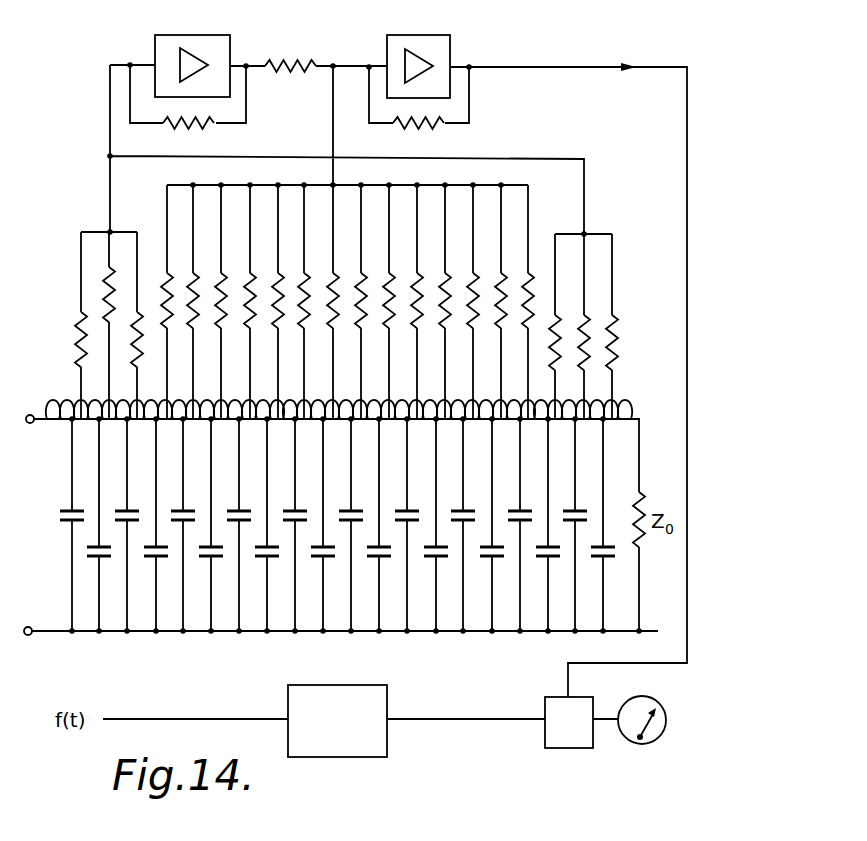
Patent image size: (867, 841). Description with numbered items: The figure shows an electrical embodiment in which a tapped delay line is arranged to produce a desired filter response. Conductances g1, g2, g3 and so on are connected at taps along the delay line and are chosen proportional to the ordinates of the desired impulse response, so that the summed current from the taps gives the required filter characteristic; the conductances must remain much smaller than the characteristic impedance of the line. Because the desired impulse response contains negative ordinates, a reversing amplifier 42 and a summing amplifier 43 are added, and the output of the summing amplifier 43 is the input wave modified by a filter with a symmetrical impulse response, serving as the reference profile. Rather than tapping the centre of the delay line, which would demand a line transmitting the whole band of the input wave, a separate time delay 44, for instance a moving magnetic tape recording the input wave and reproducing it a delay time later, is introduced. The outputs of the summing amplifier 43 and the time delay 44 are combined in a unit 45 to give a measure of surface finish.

The reversing amplifier 42 is at (238, 34).
The summing amplifier 43 is at (463, 31).
The time delay 44 is at (396, 703).
The combining unit 45 is at (541, 690).
The conductance g1 is at (80, 316).
The conductance g2 is at (110, 268).
The conductance g3 is at (127, 352).